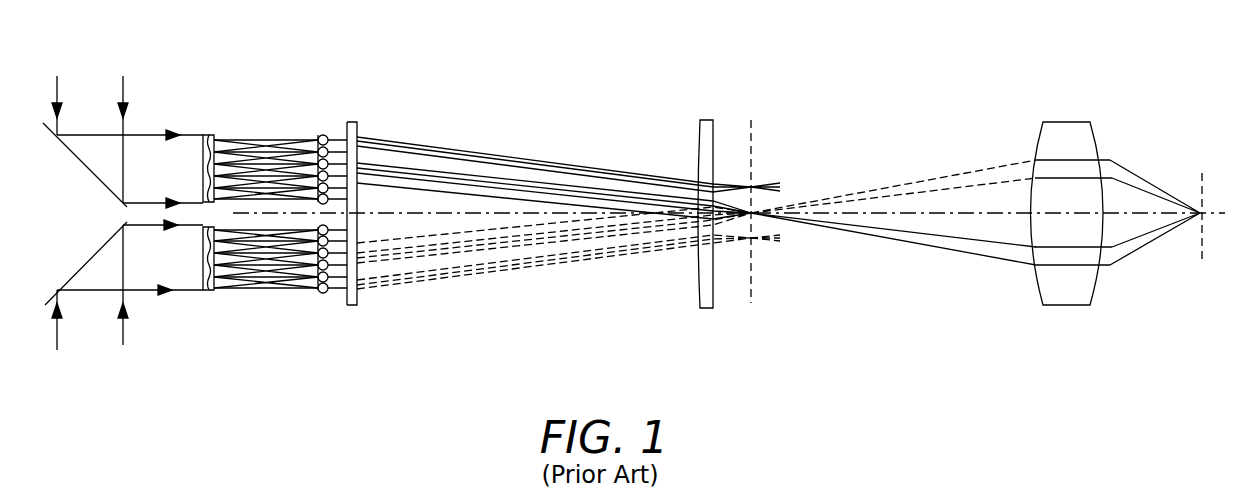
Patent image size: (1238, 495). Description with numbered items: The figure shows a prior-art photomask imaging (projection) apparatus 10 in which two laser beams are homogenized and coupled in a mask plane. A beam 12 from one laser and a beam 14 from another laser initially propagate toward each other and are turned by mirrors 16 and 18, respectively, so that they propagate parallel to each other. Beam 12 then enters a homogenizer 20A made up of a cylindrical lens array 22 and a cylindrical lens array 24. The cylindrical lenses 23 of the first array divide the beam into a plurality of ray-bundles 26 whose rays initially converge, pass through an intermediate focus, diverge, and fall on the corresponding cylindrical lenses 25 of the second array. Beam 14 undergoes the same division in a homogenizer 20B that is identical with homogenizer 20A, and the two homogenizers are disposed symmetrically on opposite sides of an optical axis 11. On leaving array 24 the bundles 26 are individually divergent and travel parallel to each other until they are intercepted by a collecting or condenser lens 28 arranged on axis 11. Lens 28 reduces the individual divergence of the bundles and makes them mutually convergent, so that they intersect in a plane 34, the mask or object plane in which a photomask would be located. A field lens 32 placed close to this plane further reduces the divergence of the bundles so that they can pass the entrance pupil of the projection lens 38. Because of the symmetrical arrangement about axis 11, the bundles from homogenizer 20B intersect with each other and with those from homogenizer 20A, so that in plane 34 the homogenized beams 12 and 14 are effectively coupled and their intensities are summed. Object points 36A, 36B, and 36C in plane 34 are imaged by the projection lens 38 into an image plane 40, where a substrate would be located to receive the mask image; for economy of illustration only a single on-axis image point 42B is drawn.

The photomask imaging (projection) apparatus 10 is at (748, 382).
The optical axis 11 is at (450, 213).
The beam 12 is at (127, 98).
The beam 14 is at (128, 328).
The mirror 16 is at (100, 175).
The mirror 18 is at (90, 262).
The homogenizer 20A is at (270, 83).
The homogenizer 20B is at (275, 332).
The cylindrical lens array 22 is at (220, 127).
The cylindrical lenses 23 is at (190, 135).
The cylindrical lens array 24 is at (318, 128).
The cylindrical lenses 25 is at (335, 128).
The ray-bundles 26 is at (260, 152).
The collecting or condenser lens 28 is at (358, 124).
The field lens 32 is at (697, 168).
The plane 34 is at (753, 138).
The object point 36A is at (755, 178).
The object point 36B is at (757, 217).
The object point 36C is at (756, 243).
The projection lens 38 is at (1040, 131).
The image plane 40 is at (1198, 250).
The image point 42B is at (1198, 207).